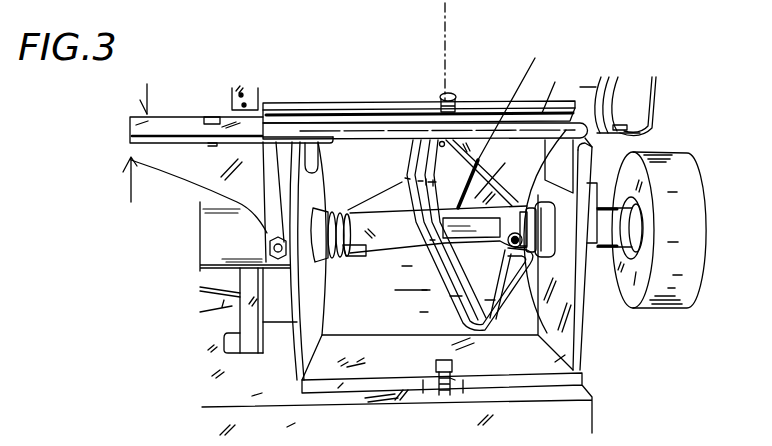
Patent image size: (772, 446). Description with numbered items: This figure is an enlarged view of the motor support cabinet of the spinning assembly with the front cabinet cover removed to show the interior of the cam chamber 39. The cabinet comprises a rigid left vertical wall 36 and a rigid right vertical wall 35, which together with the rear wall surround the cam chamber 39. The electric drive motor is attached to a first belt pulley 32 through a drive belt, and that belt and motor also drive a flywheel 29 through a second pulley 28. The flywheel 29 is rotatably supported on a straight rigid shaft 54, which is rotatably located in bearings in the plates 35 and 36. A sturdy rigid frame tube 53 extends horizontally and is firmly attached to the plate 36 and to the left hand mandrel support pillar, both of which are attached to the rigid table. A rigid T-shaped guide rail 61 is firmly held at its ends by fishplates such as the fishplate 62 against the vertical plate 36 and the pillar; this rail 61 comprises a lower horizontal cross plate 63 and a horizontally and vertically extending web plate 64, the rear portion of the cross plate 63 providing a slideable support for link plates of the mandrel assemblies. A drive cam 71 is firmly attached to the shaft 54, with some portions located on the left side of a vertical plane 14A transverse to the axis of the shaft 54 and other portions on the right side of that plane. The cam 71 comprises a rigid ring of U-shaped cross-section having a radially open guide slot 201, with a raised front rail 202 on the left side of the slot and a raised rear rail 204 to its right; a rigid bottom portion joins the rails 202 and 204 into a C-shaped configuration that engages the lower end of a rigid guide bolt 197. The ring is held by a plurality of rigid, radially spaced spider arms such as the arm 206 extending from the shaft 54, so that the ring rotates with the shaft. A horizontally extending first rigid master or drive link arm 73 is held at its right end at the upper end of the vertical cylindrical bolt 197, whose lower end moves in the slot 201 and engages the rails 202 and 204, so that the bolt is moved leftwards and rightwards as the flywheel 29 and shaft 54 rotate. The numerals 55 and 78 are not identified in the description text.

The vertical plane 14A is at (464, 20).
The second pulley 28 is at (638, 204).
The flywheel 29 is at (687, 256).
The first belt pulley 32 is at (636, 100).
The right vertical wall 35 is at (570, 318).
The left vertical wall 36 is at (309, 361).
The cam chamber 39 is at (426, 314).
The frame tube 53 is at (203, 252).
The shaft 54 is at (341, 262).
The support leg 55 is at (250, 316).
The T-shaped guide rail 61 is at (117, 86).
The fishplate 62 is at (193, 185).
The lower horizontal cross plate 63 is at (146, 131).
The web plate 64 is at (172, 88).
The drive cam 71 is at (408, 178).
The first rigid master or drive link arm 73 is at (319, 105).
The slide bar 78 is at (480, 166).
The guide bolt 197 is at (452, 93).
The guide slot 201 is at (470, 310).
The raised front rail 202 is at (444, 268).
The raised rear rail 204 is at (505, 122).
The spider arm 206 is at (563, 86).